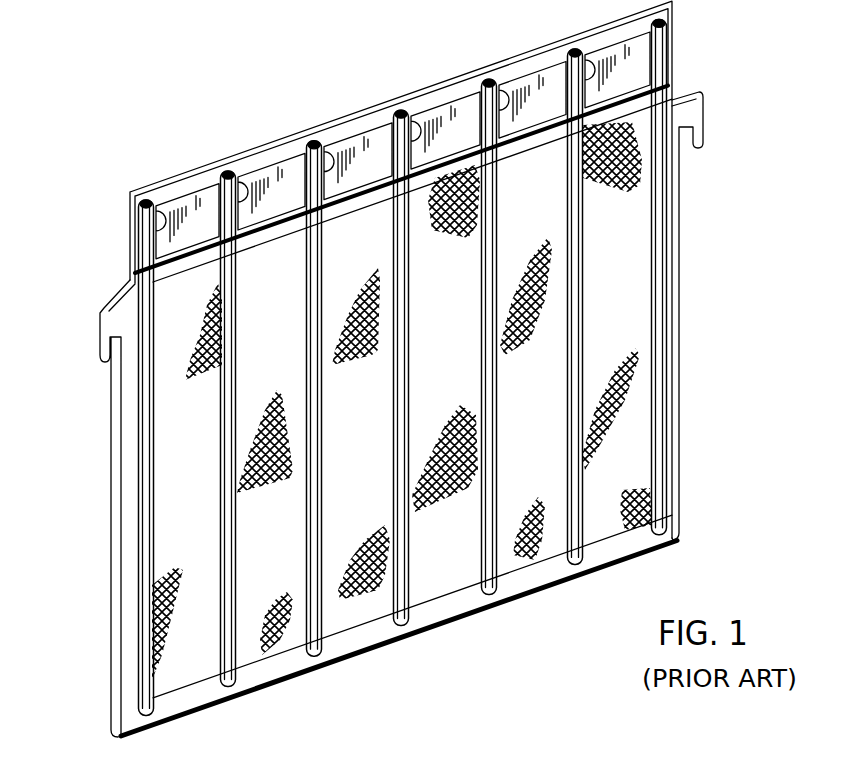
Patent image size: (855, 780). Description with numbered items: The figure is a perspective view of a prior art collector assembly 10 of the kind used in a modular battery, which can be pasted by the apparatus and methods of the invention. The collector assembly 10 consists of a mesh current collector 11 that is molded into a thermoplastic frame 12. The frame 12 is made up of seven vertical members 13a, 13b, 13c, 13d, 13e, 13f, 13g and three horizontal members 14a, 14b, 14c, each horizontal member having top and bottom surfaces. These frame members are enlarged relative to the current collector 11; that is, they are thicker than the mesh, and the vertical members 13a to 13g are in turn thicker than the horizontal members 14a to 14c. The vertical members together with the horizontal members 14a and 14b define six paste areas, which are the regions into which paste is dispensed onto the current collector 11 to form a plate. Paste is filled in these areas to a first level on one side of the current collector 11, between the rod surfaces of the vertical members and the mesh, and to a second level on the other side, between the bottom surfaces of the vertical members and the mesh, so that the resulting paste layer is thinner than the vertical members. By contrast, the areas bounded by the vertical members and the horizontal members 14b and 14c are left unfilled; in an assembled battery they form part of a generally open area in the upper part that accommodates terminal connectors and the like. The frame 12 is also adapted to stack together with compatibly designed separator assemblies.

The collector assembly 10 is at (356, 69).
The mesh current collector 11 is at (620, 386).
The thermoplastic frame 12 is at (690, 441).
The vertical member 13a is at (146, 546).
The vertical member 13b is at (228, 521).
The vertical member 13c is at (316, 514).
The vertical member 13d is at (401, 457).
The vertical member 13e is at (489, 259).
The vertical member 13f is at (575, 201).
The vertical member 13g is at (667, 210).
The horizontal member 14a is at (447, 606).
The horizontal member 14b is at (172, 259).
The horizontal member 14c is at (270, 148).